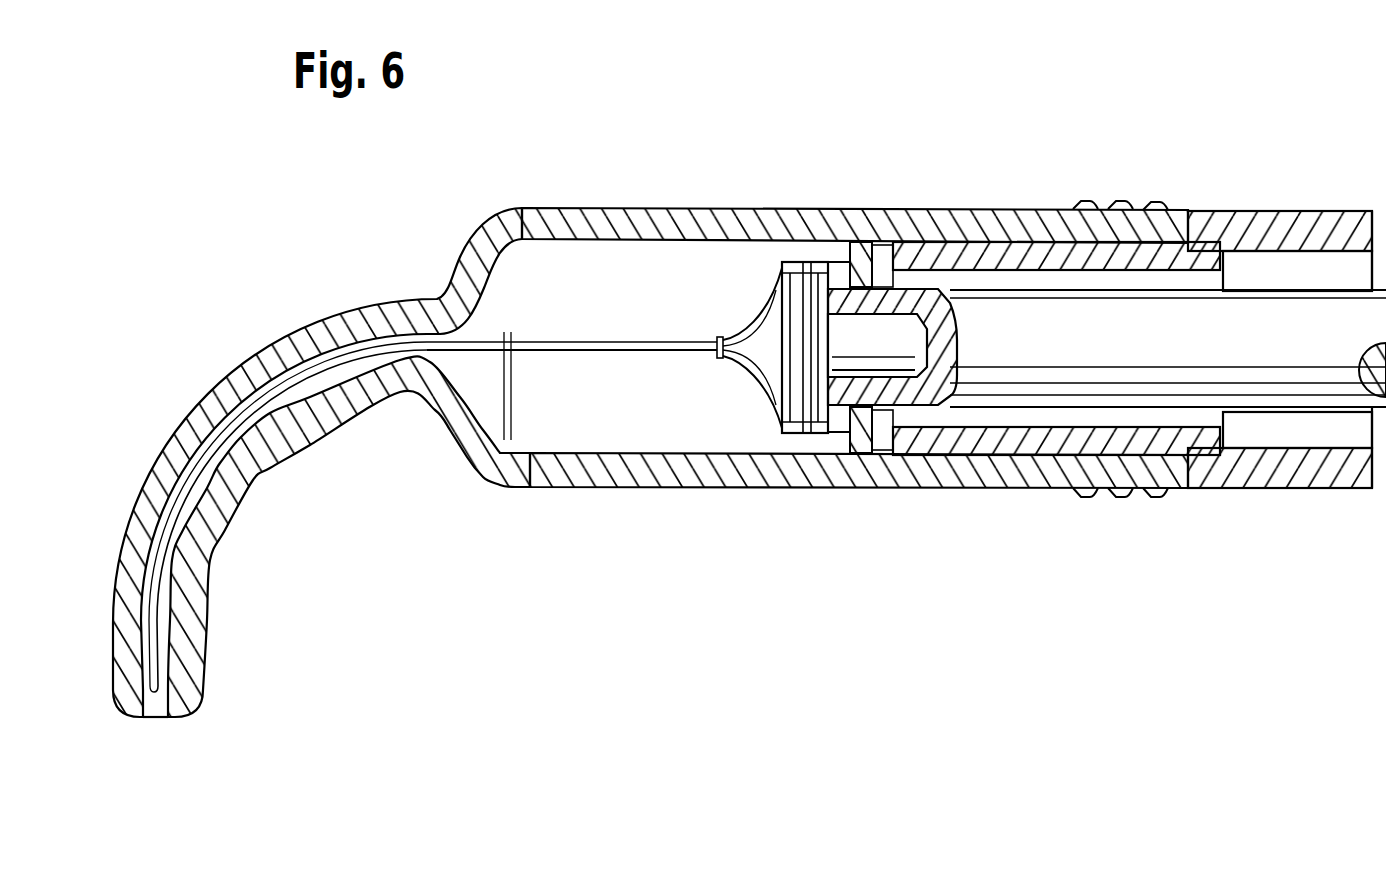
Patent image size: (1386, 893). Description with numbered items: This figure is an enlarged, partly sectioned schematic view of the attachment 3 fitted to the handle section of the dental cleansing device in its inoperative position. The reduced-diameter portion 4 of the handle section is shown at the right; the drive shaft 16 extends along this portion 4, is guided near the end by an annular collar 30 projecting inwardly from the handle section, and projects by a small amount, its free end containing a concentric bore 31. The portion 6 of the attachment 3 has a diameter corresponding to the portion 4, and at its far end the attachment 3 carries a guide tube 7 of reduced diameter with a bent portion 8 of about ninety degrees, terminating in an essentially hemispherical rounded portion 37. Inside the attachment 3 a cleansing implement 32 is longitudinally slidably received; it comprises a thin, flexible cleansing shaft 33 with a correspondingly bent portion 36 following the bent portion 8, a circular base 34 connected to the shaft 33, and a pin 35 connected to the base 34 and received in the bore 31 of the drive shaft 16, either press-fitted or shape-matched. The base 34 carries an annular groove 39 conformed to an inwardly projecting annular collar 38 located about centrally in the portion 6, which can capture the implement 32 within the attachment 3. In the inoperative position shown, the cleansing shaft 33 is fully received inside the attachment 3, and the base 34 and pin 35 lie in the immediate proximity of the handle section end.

The attachment 3 is at (672, 514).
The portion of the handle section 4 is at (1318, 468).
The portion of the attachment 6 is at (585, 466).
The guide tube 7 is at (253, 380).
The bent portion 8 is at (272, 477).
The bent portion 36 is at (290, 521).
The rounded portion 37 is at (198, 700).
The cleansing shaft 33 is at (605, 341).
The cleansing implement 32 is at (740, 320).
The circular base 34 is at (780, 372).
The annular groove 39 is at (797, 260).
The pin 35 is at (853, 350).
The bore 31 is at (930, 412).
The annular collar 38 is at (857, 256).
The annular collar 30 is at (910, 268).
The drive shaft 16 is at (1070, 380).